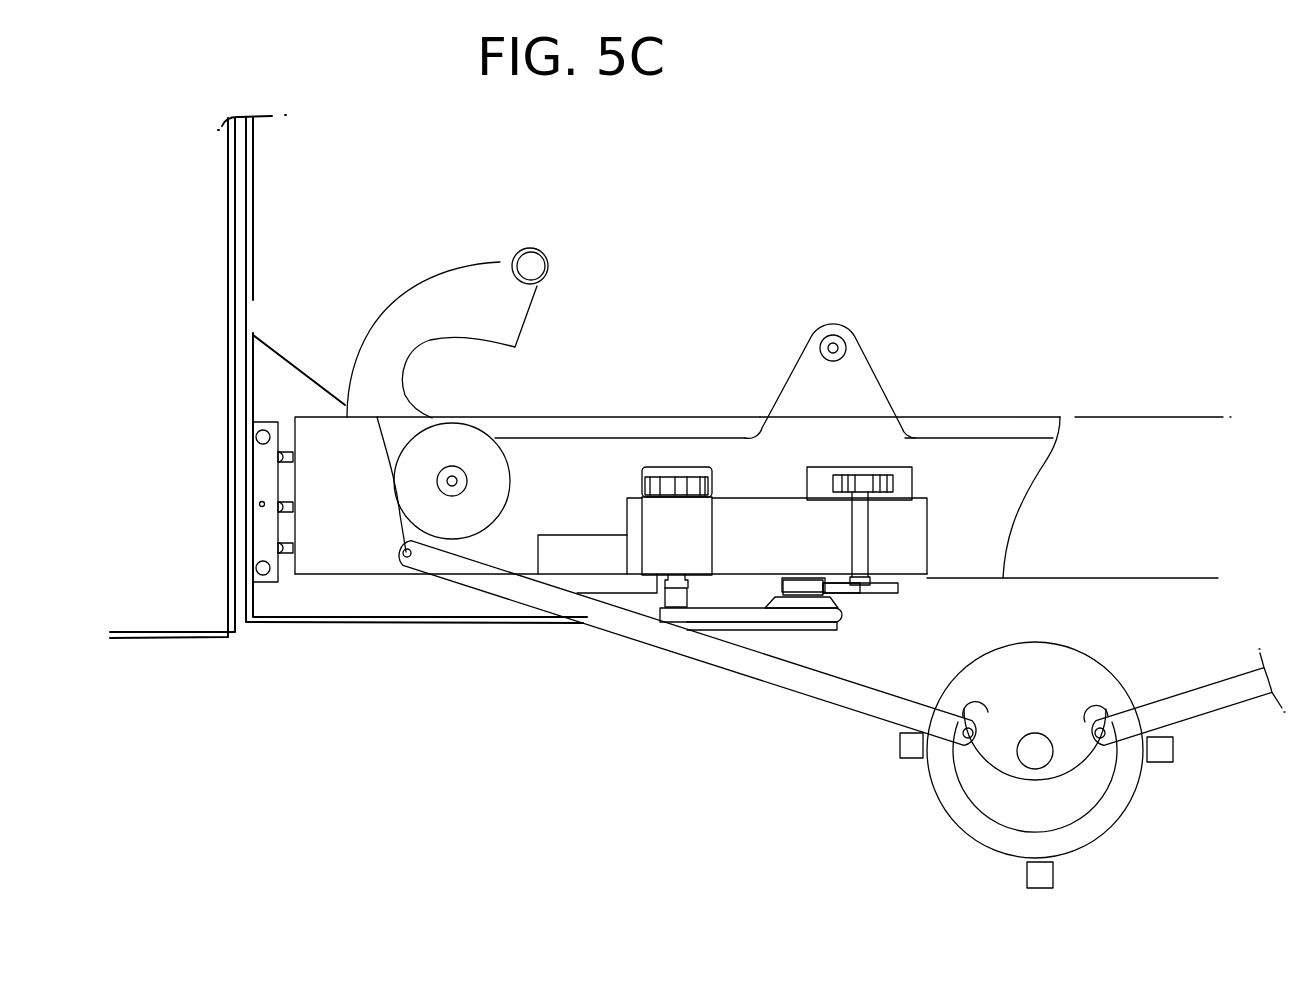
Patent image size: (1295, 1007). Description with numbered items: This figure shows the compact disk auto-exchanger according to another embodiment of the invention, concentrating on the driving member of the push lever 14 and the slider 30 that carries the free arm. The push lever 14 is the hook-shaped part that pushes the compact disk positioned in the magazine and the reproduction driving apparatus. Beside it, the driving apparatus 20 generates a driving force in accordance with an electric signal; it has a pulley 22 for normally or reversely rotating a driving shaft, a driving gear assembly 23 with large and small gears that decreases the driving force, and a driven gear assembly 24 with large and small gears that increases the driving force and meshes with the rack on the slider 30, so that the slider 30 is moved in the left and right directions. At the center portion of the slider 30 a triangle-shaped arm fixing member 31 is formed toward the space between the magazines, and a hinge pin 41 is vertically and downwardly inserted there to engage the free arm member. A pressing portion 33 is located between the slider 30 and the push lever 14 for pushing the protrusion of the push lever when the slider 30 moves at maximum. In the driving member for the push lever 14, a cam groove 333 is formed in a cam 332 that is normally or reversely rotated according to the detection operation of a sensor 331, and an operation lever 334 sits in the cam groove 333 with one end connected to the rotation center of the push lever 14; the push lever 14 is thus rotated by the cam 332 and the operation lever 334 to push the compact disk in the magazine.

The push lever 14 is at (385, 330).
The driving apparatus 20 is at (668, 533).
The pulley 22 is at (660, 608).
The driving gear assembly 23 is at (870, 540).
The driven gear assembly 24 is at (840, 620).
The slider 30 is at (987, 473).
The arm fixing member 31 is at (855, 347).
The pressing portion 33 is at (577, 577).
The hinge pin 41 is at (836, 340).
The sensor 331 is at (903, 757).
The cam 332 is at (1064, 774).
The cam groove 333 is at (1078, 800).
The operation lever 334 is at (818, 688).